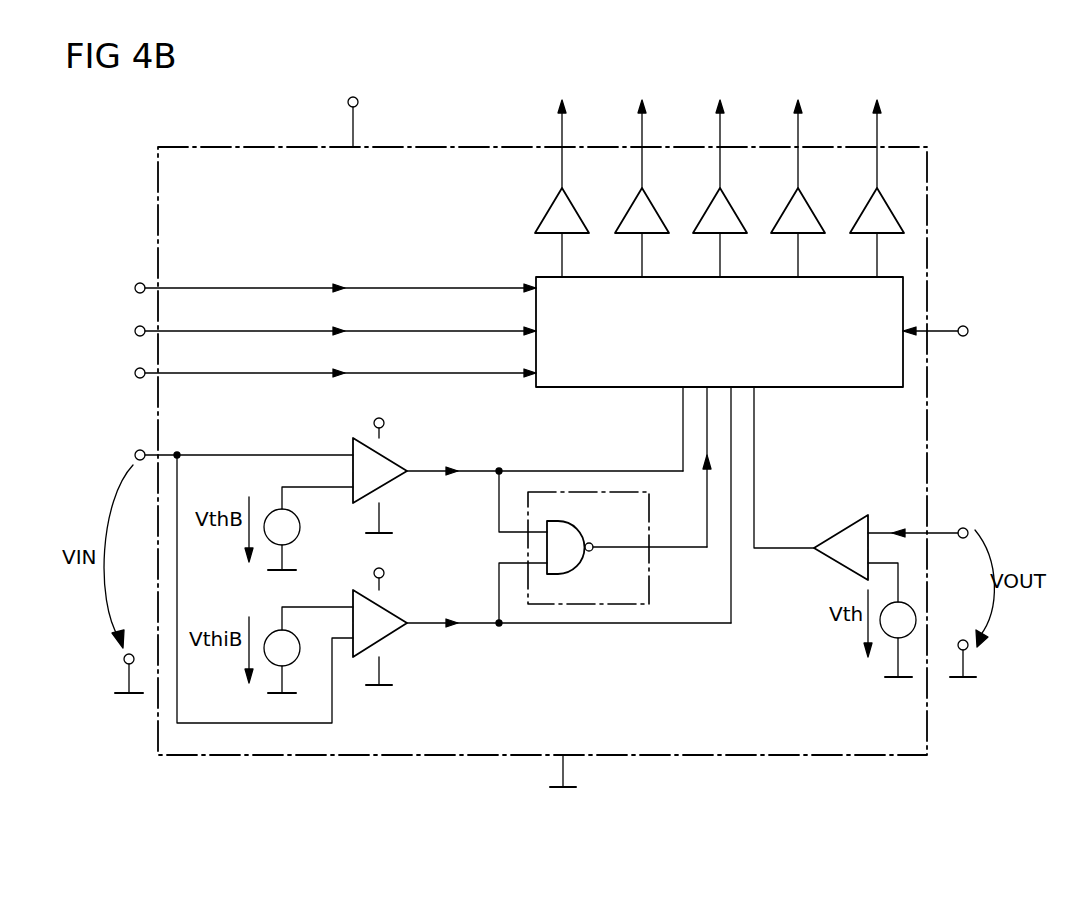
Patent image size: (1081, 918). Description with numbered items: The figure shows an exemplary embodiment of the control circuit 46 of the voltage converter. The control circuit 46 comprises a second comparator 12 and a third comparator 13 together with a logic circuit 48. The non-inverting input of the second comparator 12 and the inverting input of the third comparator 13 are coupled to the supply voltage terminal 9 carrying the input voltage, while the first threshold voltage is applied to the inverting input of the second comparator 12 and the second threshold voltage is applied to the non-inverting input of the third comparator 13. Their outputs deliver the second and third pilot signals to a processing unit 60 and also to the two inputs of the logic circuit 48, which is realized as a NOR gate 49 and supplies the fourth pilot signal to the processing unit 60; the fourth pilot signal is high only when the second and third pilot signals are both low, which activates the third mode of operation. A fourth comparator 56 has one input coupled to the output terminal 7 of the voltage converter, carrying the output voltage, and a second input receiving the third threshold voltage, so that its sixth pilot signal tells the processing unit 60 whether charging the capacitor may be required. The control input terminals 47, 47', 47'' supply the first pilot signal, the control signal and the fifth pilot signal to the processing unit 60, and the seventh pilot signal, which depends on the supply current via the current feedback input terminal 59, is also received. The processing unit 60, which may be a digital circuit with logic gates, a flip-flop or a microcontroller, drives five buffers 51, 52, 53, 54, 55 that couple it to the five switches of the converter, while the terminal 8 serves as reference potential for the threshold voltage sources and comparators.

The output terminal 7 is at (347, 104).
The reference potential terminal 8 is at (385, 528).
The supply voltage terminal 9 is at (134, 455).
The second comparator 12 is at (394, 450).
The third comparator 13 is at (394, 604).
The control circuit 46 is at (720, 757).
The control input terminal 47 is at (328, 258).
The control input terminal 47' is at (313, 306).
The control input terminal 47'' is at (313, 388).
The logic circuit 48 is at (649, 591).
The NOR gate 49 is at (583, 533).
The buffer 51 is at (552, 214).
The buffer 52 is at (632, 214).
The buffer 53 is at (710, 214).
The buffer 54 is at (788, 214).
The buffer 55 is at (867, 214).
The fourth comparator 56 is at (845, 529).
The current feedback input terminal 59 is at (956, 338).
The processing unit 60 is at (825, 388).